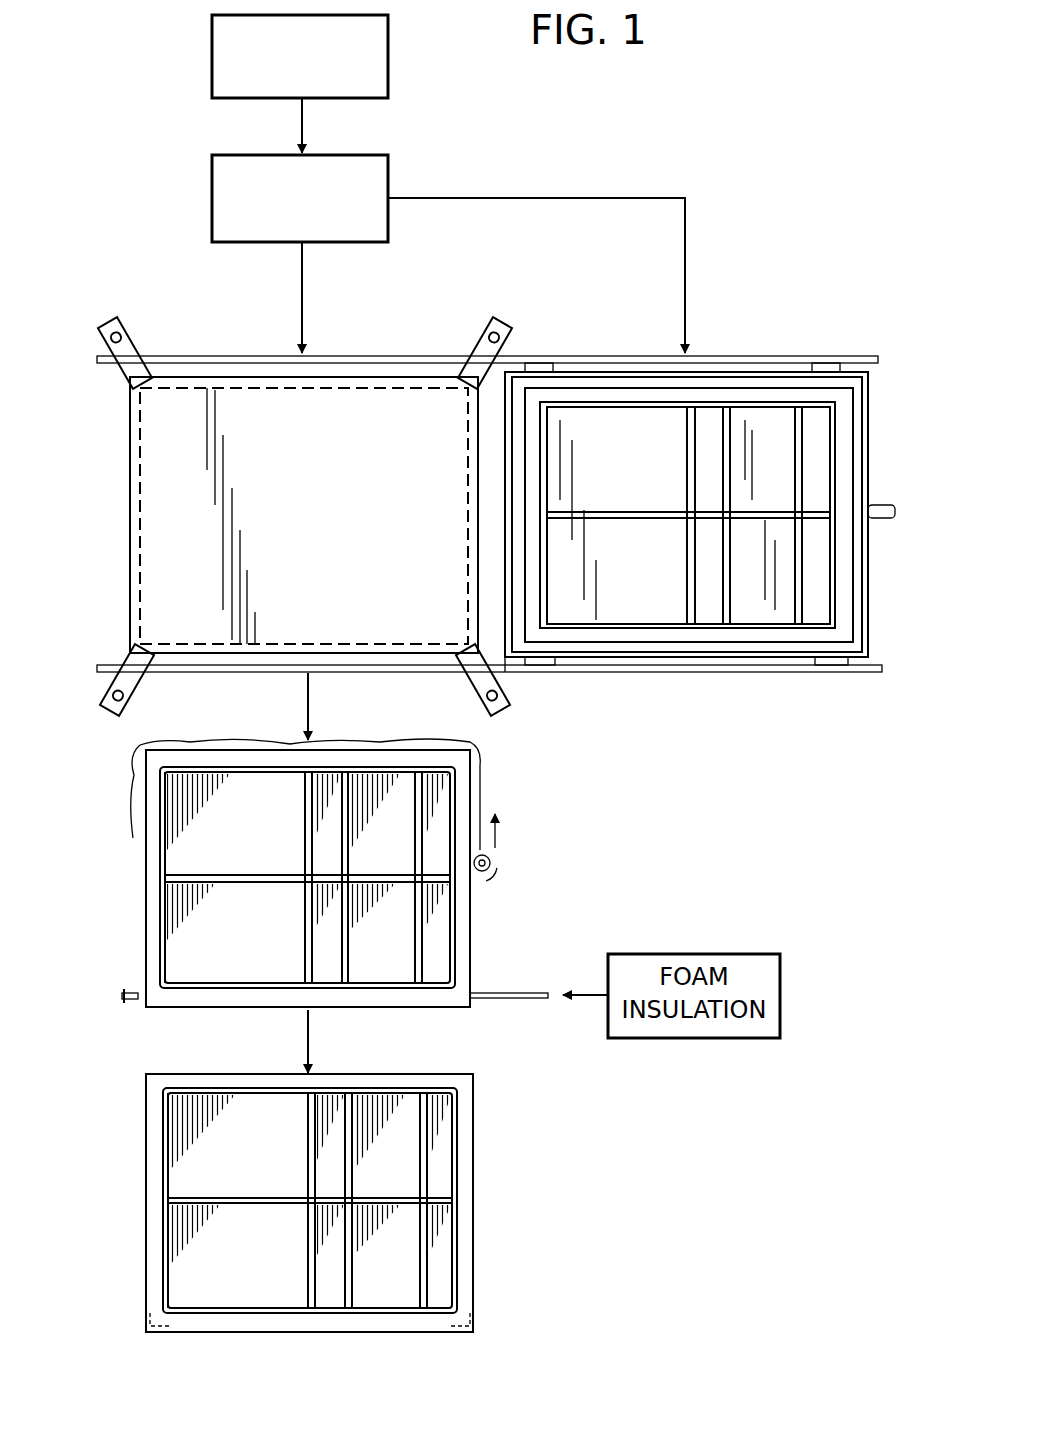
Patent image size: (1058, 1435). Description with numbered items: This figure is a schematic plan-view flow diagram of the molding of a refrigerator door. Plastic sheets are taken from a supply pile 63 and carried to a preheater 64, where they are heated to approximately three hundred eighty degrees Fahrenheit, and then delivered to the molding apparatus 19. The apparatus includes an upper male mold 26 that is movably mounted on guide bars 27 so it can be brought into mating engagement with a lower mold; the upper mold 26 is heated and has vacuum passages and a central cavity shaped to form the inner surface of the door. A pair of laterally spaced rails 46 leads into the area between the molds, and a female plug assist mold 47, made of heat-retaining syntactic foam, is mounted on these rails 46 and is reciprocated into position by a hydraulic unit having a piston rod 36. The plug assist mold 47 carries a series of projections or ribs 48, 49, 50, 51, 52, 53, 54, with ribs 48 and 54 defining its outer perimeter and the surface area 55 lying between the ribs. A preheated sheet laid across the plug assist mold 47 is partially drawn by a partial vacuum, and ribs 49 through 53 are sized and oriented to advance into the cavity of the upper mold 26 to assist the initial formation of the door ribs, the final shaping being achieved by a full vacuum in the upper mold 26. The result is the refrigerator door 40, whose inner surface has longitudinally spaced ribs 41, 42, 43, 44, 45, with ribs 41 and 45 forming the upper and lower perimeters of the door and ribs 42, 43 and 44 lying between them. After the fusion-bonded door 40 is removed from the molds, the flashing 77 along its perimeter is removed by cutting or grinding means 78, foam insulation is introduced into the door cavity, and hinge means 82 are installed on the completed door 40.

The molding apparatus 19 is at (115, 490).
The upper male mold 26 is at (242, 380).
The guide bars 27 is at (116, 338).
The piston rod 36 is at (878, 506).
The refrigerator door 40 is at (474, 931).
The rib 41 is at (455, 904).
The rib 42 is at (420, 961).
The rib 43 is at (346, 803).
The rib 44 is at (306, 814).
The rib 45 is at (162, 862).
The rails 46 is at (613, 356).
The female plug assist mold 47 is at (786, 664).
The rib 48 is at (505, 672).
The rib 49 is at (548, 603).
The rib 50 is at (690, 435).
The rib 51 is at (722, 430).
The rib 52 is at (792, 440).
The rib 53 is at (832, 435).
The rib 54 is at (870, 628).
The surface area 55 is at (668, 585).
The supply pile 63 is at (388, 50).
The preheater 64 is at (388, 167).
The flashing 77 is at (476, 783).
The cutting or grinding means 78 is at (490, 860).
The hinge means 82 is at (130, 992).